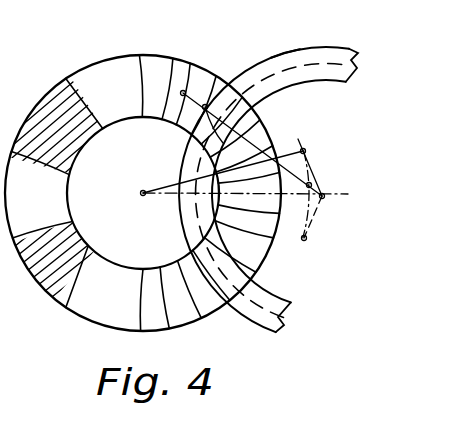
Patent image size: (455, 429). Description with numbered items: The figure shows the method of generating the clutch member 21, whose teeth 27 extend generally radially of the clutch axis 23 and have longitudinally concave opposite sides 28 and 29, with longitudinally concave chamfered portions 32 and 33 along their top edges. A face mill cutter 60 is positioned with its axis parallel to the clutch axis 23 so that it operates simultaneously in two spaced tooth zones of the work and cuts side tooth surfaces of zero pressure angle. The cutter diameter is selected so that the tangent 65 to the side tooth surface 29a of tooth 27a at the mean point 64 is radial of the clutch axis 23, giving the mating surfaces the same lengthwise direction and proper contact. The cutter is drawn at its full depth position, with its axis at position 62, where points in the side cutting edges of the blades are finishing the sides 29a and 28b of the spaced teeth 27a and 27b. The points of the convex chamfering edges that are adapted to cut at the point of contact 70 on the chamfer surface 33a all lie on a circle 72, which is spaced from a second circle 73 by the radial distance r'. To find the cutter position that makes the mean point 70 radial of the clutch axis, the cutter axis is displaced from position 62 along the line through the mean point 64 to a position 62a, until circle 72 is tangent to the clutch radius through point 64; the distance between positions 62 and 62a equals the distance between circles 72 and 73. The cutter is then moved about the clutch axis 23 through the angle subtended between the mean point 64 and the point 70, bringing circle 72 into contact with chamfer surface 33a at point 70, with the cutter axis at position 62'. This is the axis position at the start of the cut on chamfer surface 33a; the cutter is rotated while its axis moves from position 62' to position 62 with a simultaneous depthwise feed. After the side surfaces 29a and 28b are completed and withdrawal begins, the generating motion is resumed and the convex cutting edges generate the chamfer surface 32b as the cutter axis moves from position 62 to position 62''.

The clutch member 21 is at (107, 326).
The clutch axis 23 is at (141, 198).
The teeth 27 is at (78, 156).
The tooth 27a is at (143, 193).
The tooth 27b is at (183, 322).
The tooth side 28 is at (80, 288).
The side tooth surface 28b is at (240, 270).
The tooth side 29 is at (38, 220).
The side tooth surface 29a is at (250, 115).
The chamfered portion 32 is at (157, 68).
The chamfer surface 32b is at (220, 318).
The chamfered portion 33 is at (152, 323).
The chamfer surface 33a is at (143, 193).
The face mill cutter 60 is at (322, 75).
The cutter axis 62 is at (344, 186).
The cutter axis position 62' is at (325, 180).
The cutter axis position 62a is at (311, 183).
The cutter axis position 62'' is at (331, 227).
The mean point 64 is at (227, 135).
The tangent 65 is at (164, 165).
The point of contact 70 is at (181, 96).
The circle 72 is at (348, 54).
The circle 73 is at (283, 49).